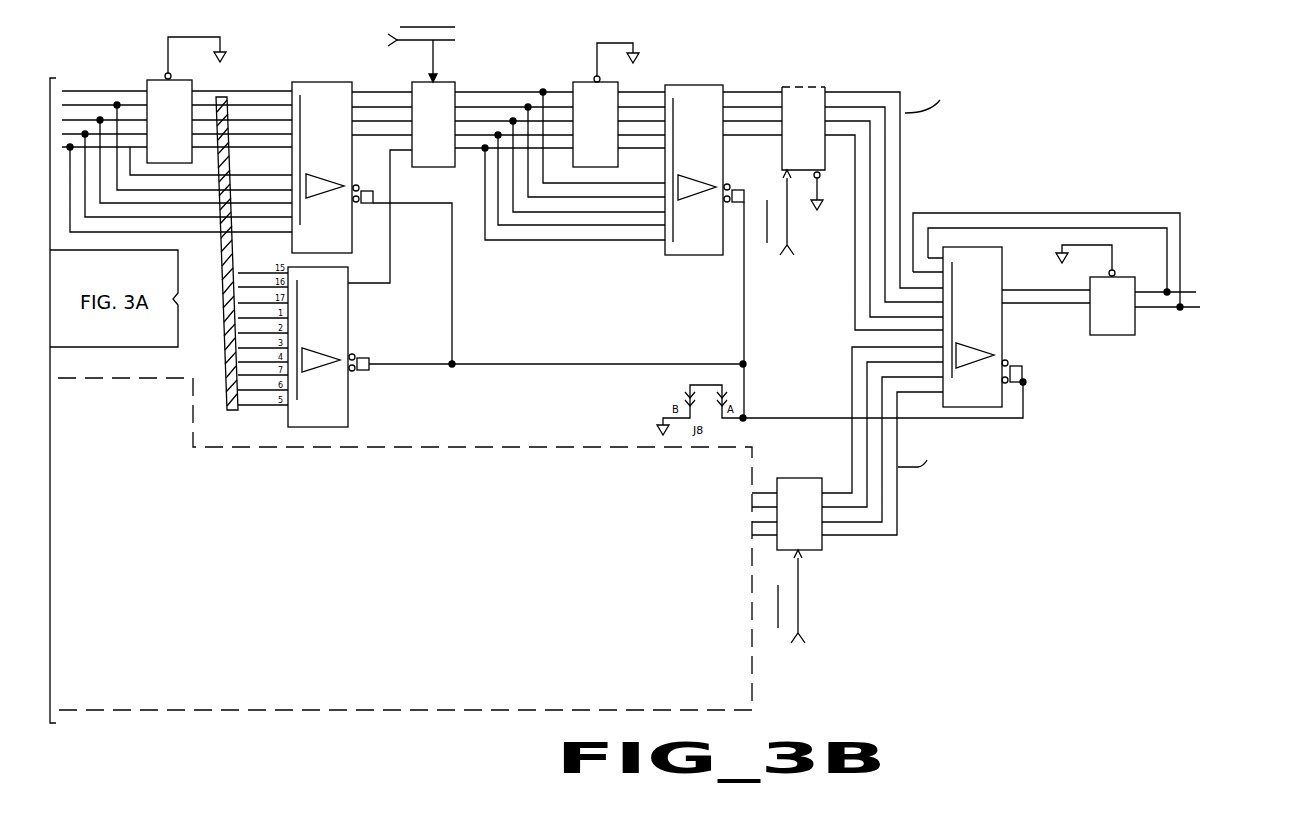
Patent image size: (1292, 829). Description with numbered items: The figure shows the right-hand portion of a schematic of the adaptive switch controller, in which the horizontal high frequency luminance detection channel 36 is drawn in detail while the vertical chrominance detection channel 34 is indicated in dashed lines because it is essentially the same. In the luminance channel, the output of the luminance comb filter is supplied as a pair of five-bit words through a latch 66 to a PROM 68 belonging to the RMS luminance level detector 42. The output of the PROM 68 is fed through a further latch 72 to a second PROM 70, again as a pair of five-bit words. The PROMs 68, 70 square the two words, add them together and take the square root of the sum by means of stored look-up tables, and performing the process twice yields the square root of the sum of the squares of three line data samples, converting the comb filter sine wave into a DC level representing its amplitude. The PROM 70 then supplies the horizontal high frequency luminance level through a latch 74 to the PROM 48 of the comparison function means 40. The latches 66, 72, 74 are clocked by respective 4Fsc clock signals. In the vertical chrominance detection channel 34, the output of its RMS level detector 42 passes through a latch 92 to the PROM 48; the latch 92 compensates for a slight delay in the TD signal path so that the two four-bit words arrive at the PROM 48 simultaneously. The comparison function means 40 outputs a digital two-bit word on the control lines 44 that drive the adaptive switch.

The vertical chrominance detection channel 34 is at (437, 443).
The horizontal high frequency luminance detection channel 36 is at (484, 60).
The comparison function means 40 is at (1046, 355).
The RMS luminance level detector 42 is at (428, 284).
The control lines 44 is at (1201, 309).
The PROM 48 is at (1002, 338).
The latch 66 is at (150, 77).
The PROM 68 is at (345, 265).
The second PROM 70 is at (683, 84).
The further latch 72 is at (455, 81).
The latch 74 is at (797, 87).
The latch 92 is at (812, 550).